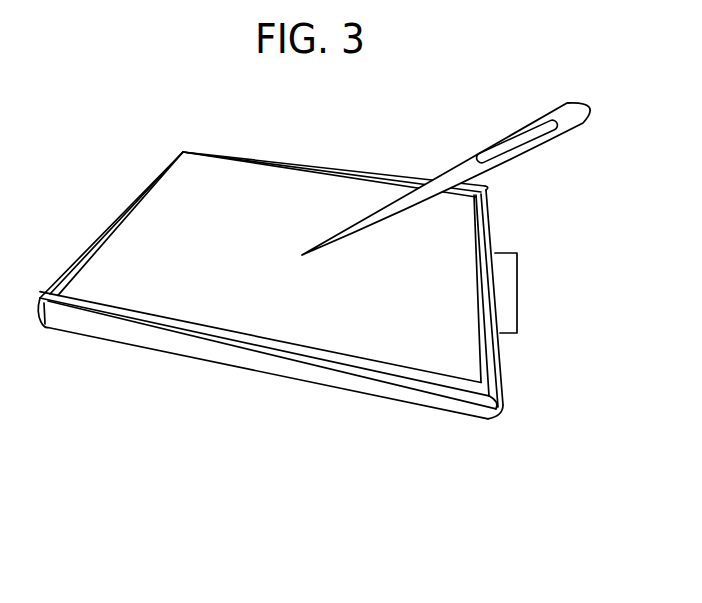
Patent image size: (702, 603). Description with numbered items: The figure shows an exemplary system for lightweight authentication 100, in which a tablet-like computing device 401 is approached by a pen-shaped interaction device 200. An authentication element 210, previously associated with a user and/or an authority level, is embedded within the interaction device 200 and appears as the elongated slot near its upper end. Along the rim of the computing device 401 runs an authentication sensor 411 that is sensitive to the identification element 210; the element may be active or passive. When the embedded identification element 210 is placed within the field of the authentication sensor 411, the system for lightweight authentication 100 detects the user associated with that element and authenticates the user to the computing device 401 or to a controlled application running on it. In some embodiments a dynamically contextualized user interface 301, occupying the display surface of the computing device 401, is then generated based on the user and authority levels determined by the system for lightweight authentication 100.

The system for lightweight authentication 100 is at (505, 290).
The interaction device 200 is at (455, 170).
The authentication element 210 is at (503, 151).
The dynamically contextualized user interface 301 is at (133, 268).
The computing device 401 is at (160, 351).
The authentication sensor 411 is at (129, 208).